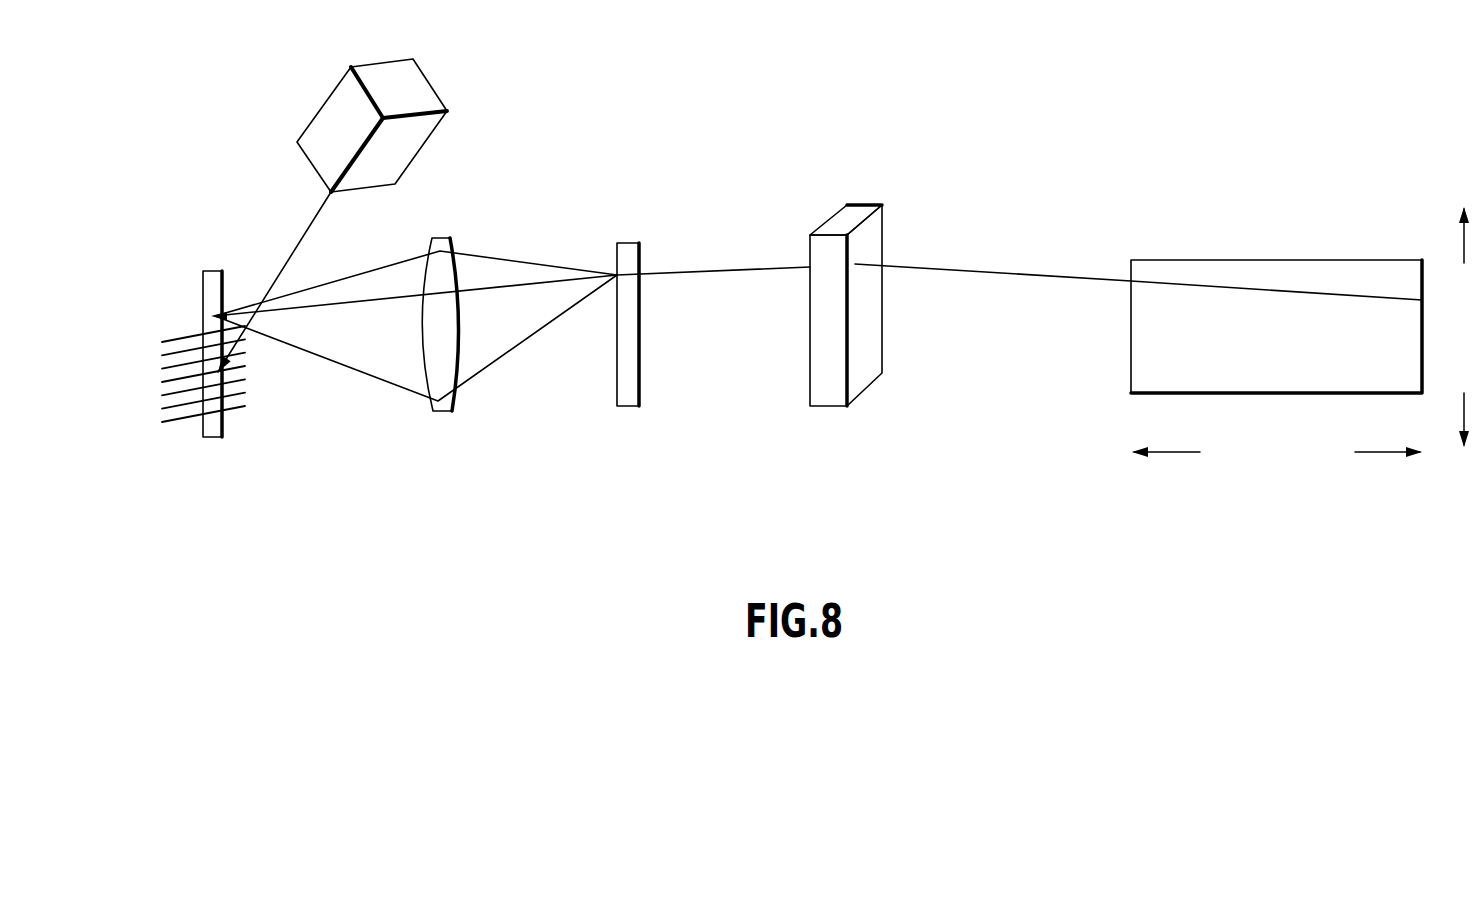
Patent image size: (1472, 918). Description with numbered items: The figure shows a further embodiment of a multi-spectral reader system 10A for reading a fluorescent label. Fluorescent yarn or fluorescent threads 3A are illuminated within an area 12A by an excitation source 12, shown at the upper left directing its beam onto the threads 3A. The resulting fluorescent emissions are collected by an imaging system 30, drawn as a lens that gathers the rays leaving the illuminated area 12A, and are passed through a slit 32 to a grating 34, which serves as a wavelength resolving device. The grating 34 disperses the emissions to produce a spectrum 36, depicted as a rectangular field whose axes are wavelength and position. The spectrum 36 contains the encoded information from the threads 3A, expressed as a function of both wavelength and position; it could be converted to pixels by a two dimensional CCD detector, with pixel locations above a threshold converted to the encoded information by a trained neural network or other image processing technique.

The multi-spectral reader system 10A is at (950, 528).
The excitation source 12 is at (414, 138).
The fluorescent threads 3A is at (172, 340).
The area 12A is at (210, 437).
The imaging system 30 is at (438, 413).
The slit 32 is at (630, 406).
The grating 34 is at (828, 406).
The spectrum 36 is at (1227, 260).